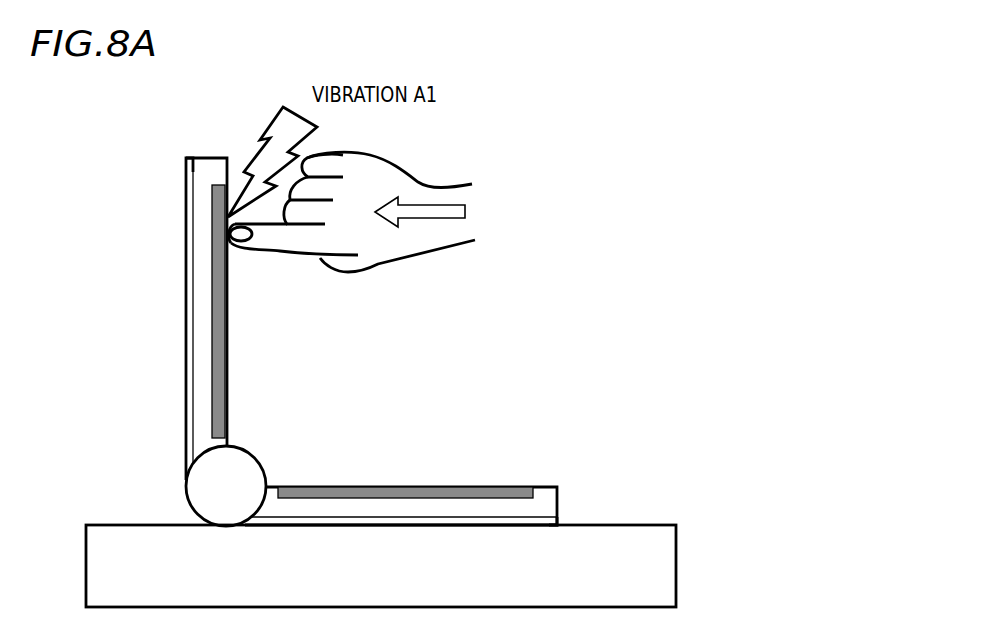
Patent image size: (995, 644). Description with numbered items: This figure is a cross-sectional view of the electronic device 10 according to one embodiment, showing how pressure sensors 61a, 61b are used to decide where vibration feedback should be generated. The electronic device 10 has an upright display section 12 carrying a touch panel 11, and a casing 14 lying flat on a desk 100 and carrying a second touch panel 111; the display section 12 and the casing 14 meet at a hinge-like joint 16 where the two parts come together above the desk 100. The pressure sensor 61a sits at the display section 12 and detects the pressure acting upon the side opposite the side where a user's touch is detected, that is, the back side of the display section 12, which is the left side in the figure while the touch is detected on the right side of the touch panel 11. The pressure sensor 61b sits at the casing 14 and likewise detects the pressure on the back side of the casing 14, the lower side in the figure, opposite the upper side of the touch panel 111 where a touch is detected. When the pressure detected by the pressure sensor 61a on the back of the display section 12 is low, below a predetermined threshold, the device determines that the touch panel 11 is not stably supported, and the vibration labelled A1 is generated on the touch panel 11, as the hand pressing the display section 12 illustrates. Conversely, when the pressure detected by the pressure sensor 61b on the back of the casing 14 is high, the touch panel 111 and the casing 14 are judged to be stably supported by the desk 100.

The electronic device 10 is at (150, 160).
The touch panel 11 is at (215, 403).
The display section 12 is at (197, 305).
The casing 14 is at (543, 510).
The hinge 16 is at (208, 483).
The pressure sensor 61a is at (188, 158).
The pressure sensor 61b is at (558, 520).
The desk 100 is at (665, 563).
The touch panel 111 is at (398, 487).